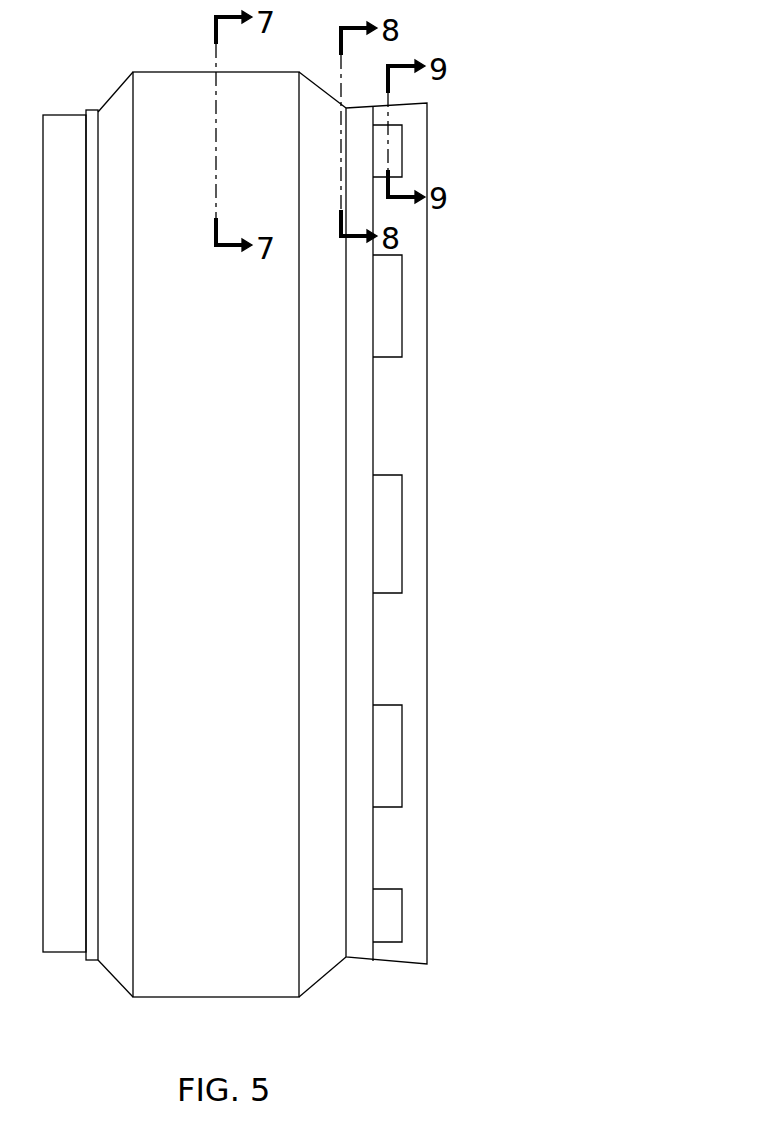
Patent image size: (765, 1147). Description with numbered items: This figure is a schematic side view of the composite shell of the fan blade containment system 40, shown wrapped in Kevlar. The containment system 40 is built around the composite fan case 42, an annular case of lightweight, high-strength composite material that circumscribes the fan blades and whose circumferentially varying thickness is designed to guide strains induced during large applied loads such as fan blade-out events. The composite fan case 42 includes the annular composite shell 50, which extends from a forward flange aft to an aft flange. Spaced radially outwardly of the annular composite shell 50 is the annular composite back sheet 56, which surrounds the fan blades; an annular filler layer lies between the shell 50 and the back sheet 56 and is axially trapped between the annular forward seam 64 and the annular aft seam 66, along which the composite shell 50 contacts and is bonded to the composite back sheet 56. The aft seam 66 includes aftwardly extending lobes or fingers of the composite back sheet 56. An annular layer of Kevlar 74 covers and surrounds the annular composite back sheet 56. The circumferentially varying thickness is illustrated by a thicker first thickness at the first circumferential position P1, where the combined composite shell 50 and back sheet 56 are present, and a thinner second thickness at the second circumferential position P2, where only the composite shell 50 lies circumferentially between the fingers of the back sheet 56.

The fan blade containment system 40 is at (269, 1004).
The composite fan case 42 is at (335, 980).
The annular composite shell 50 is at (397, 675).
The annular composite back sheet 56 is at (365, 412).
The annular forward seam 64 is at (96, 110).
The annular aft seam 66 is at (365, 340).
The annular layer of Kevlar 74 is at (388, 530).
The first circumferential position P1 is at (388, 777).
The second circumferential position P2 is at (397, 852).